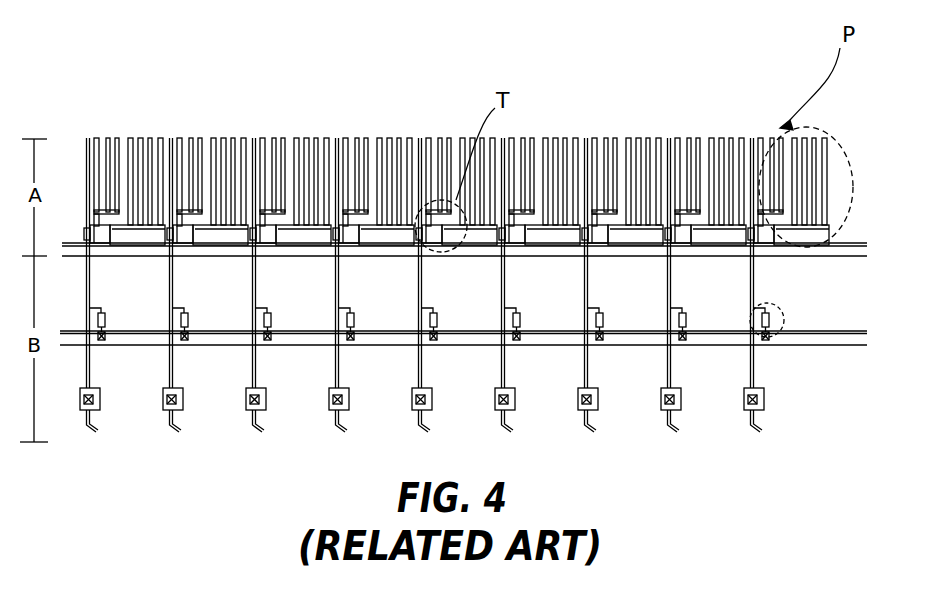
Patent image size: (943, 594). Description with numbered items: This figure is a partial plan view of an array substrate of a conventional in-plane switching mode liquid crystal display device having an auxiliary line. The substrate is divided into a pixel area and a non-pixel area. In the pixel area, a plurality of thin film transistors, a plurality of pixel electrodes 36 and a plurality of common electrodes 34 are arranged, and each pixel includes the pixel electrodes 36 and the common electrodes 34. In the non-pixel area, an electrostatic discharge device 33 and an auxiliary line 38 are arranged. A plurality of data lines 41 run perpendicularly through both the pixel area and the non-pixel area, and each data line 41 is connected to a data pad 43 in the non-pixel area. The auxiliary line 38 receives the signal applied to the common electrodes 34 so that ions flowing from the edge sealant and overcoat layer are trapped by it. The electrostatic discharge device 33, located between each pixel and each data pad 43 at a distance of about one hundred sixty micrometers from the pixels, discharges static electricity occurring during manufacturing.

The electrostatic discharge device 33 is at (797, 321).
The common electrode 34 is at (837, 191).
The pixel electrode 36 is at (822, 182).
The auxiliary line 38 is at (842, 346).
The data line 41 is at (786, 263).
The data pad 43 is at (786, 410).